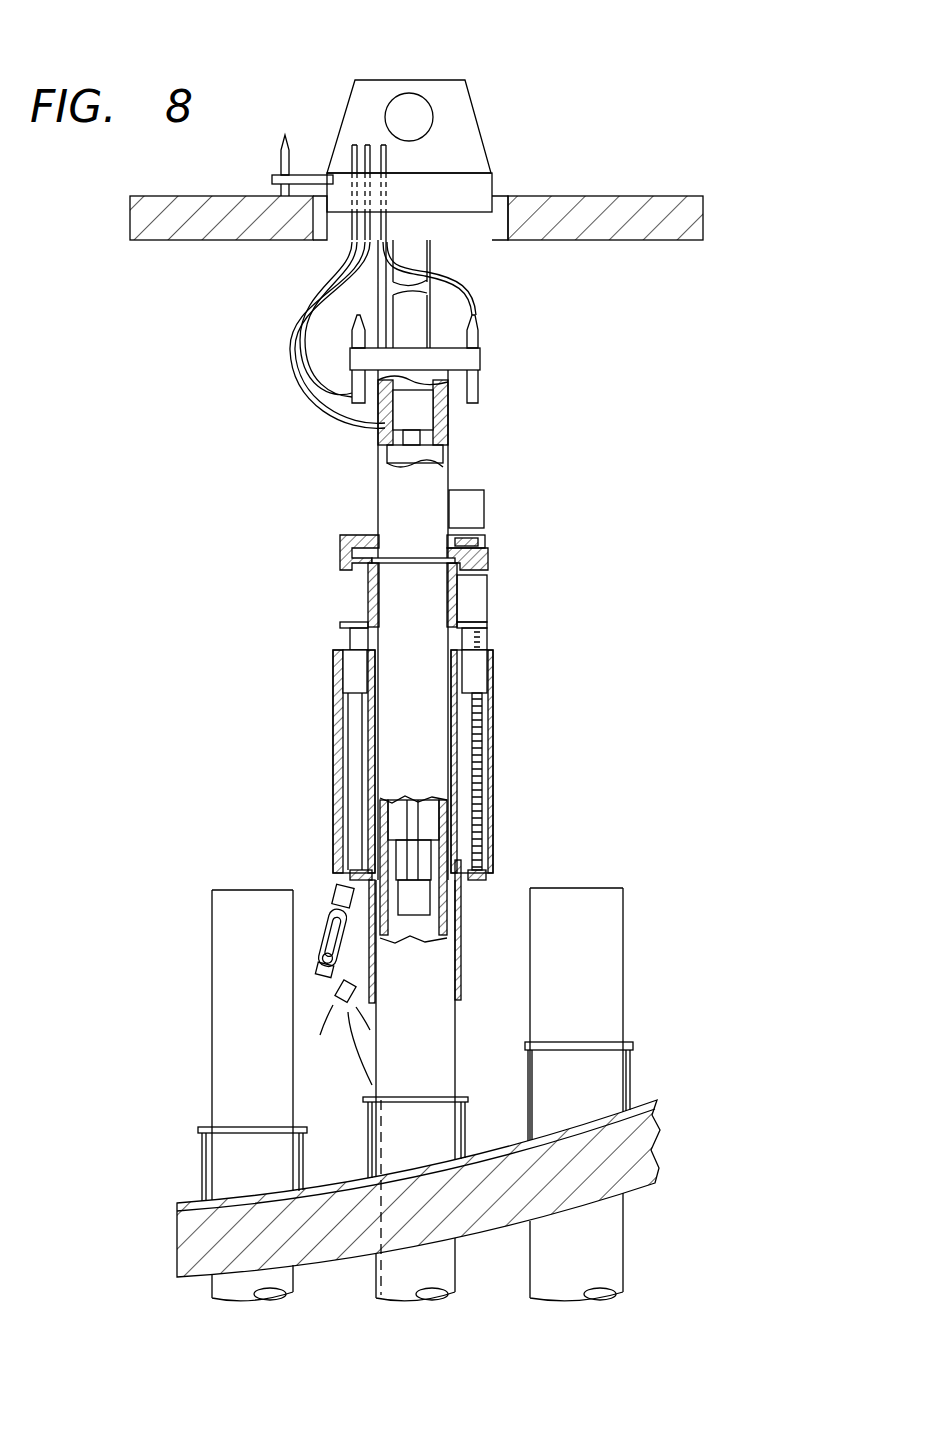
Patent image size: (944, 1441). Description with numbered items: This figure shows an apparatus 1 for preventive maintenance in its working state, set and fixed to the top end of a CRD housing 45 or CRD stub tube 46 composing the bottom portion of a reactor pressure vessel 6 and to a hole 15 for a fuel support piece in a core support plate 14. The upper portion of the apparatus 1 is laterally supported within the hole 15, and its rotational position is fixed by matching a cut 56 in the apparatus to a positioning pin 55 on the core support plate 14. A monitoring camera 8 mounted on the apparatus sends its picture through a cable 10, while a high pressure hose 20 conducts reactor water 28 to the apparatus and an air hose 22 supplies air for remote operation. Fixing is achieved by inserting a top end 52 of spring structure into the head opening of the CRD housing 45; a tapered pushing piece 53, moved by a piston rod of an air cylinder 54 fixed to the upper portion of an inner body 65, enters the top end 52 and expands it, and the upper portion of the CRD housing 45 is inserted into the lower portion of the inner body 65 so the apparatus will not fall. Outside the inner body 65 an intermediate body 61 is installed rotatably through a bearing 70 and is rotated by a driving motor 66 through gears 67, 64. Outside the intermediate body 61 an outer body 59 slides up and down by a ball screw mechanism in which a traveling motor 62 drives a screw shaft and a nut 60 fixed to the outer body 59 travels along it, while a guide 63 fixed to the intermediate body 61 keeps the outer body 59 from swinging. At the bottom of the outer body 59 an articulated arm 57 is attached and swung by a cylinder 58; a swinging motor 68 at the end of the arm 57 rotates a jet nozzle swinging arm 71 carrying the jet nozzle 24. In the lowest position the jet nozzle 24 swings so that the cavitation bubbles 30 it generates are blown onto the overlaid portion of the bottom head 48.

The apparatus 1 is at (453, 80).
The reactor pressure vessel 6 is at (650, 1185).
The monitoring camera 8 is at (352, 386).
The cable 10 is at (354, 145).
The core support plate 14 is at (650, 196).
The hole for a fuel support piece 15 is at (498, 193).
The high pressure hose 20 is at (384, 145).
The air hose 22 is at (367, 145).
The jet nozzle 24 is at (336, 1034).
The reactor water 28 is at (333, 782).
The cavitation bubbles 30 is at (363, 1040).
The CRD housing 45 is at (212, 898).
The CRD stub tube 46 is at (200, 1133).
The bottom head 48 is at (347, 1178).
The top end 52 is at (422, 915).
The pushing piece 53 is at (415, 955).
The air cylinder 54 is at (433, 413).
The positioning pin 55 is at (284, 135).
The cut 56 is at (312, 175).
The articulated arm 57 is at (340, 923).
The cylinder 58 is at (333, 890).
The outer body 59 is at (493, 731).
The nut 60 is at (478, 679).
The intermediate body 61 is at (488, 562).
The traveling motor 62 is at (487, 605).
The guide 63 is at (343, 708).
The gear 64 is at (360, 535).
The inner body 65 is at (448, 478).
The driving motor 66 is at (484, 500).
The gear 67 is at (470, 540).
The swinging motor 68 is at (332, 961).
The bearing 70 is at (372, 572).
The jet nozzle swinging arm 71 is at (337, 986).